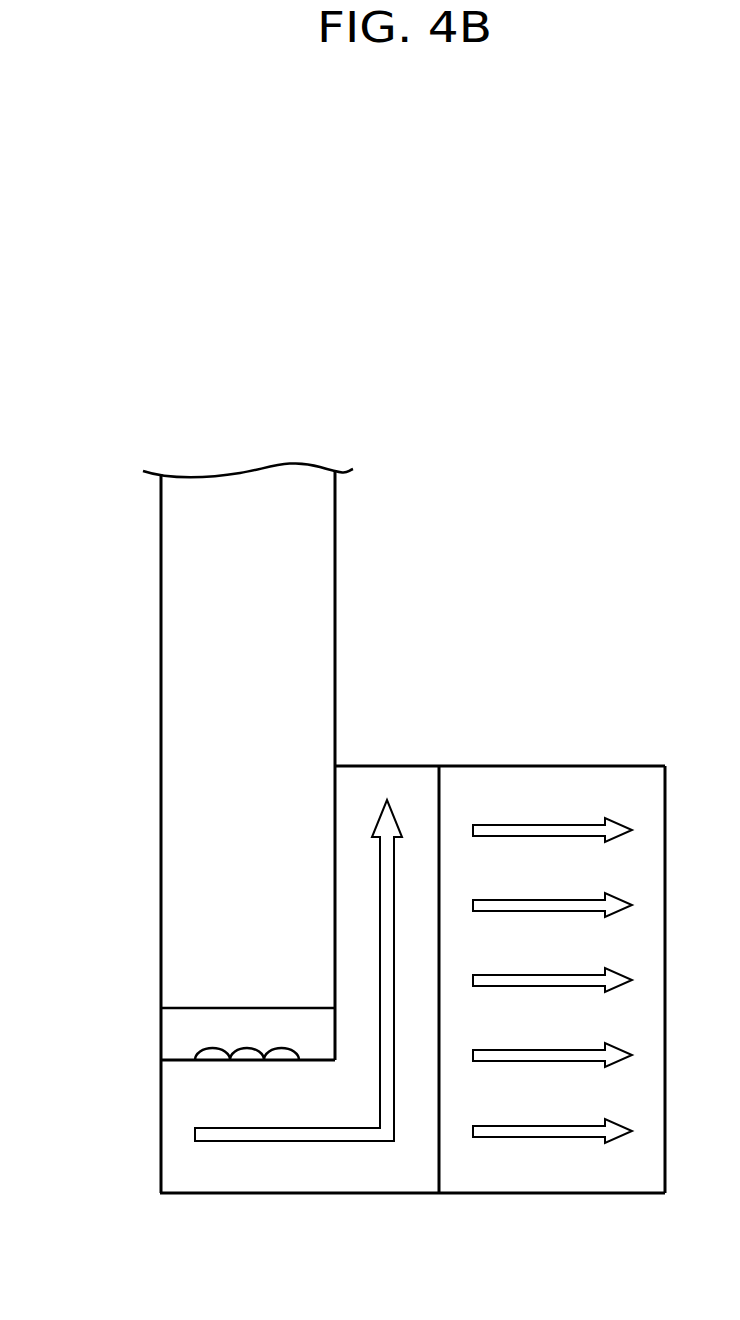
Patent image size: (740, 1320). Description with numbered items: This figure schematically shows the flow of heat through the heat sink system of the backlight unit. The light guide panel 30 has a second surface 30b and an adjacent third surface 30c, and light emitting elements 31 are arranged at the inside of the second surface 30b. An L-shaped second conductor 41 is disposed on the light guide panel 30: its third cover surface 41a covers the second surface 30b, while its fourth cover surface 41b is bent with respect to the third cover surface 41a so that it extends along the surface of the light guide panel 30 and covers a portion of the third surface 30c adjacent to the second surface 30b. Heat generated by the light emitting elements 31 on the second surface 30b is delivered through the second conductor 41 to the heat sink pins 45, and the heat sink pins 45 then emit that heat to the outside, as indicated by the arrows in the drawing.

The light guide panel 30 is at (200, 668).
The second surface 30b is at (178, 1058).
The third surface 30c is at (336, 608).
The light emitting elements 31 is at (247, 1055).
The second conductor 41 is at (287, 1183).
The third cover surface 41a is at (212, 1193).
The fourth cover surface 41b is at (435, 1073).
The heat sink pins 45 is at (558, 1178).